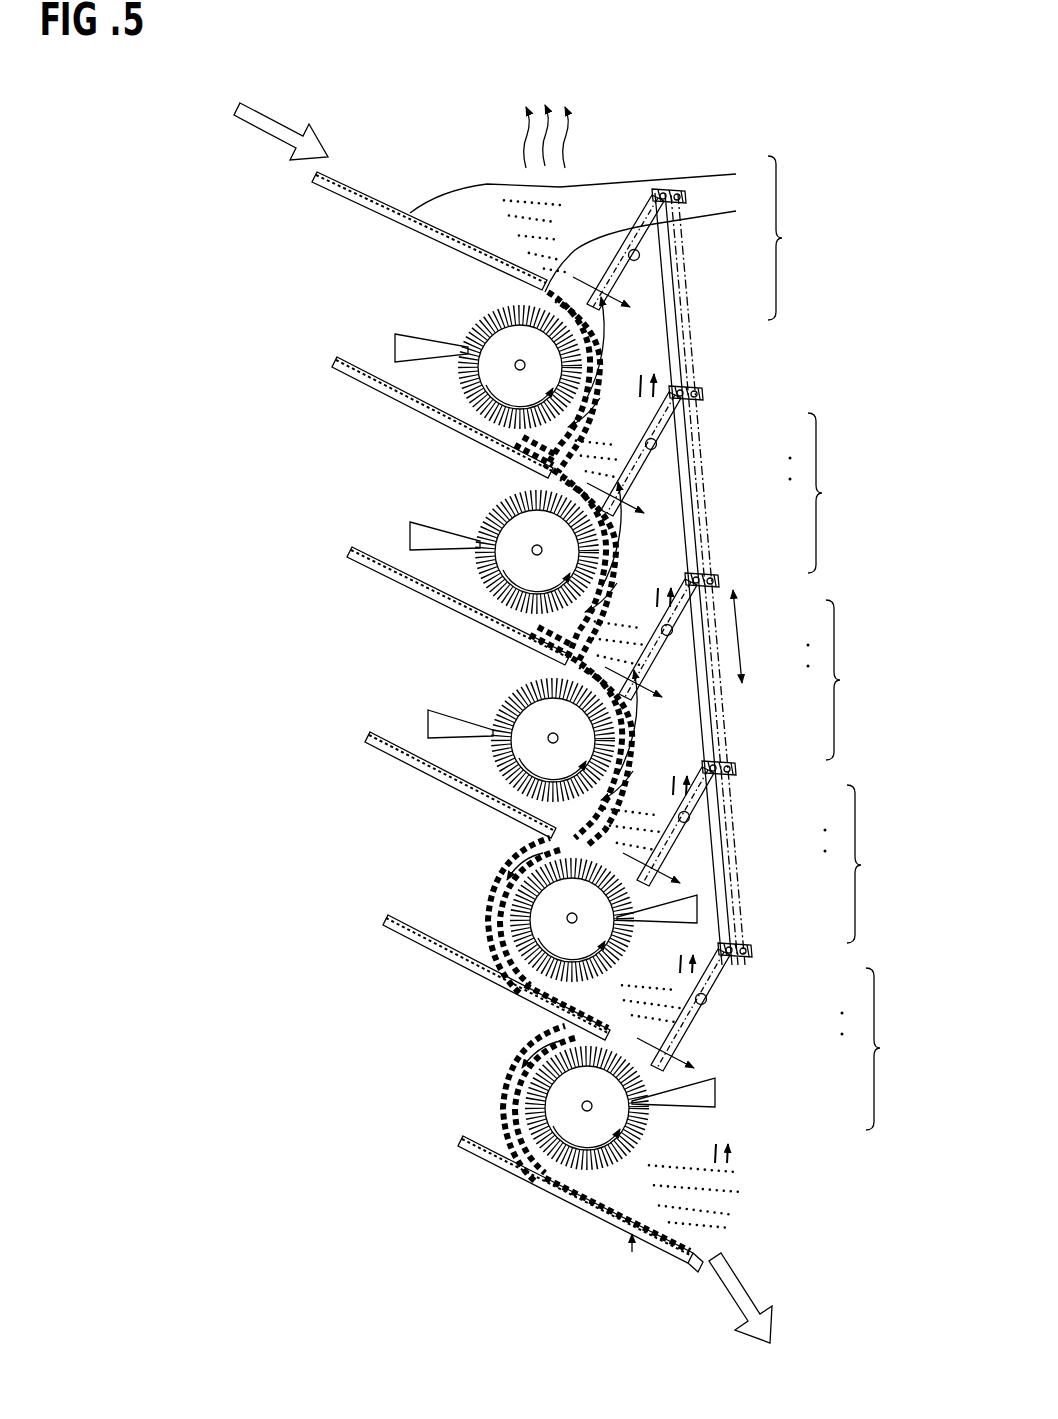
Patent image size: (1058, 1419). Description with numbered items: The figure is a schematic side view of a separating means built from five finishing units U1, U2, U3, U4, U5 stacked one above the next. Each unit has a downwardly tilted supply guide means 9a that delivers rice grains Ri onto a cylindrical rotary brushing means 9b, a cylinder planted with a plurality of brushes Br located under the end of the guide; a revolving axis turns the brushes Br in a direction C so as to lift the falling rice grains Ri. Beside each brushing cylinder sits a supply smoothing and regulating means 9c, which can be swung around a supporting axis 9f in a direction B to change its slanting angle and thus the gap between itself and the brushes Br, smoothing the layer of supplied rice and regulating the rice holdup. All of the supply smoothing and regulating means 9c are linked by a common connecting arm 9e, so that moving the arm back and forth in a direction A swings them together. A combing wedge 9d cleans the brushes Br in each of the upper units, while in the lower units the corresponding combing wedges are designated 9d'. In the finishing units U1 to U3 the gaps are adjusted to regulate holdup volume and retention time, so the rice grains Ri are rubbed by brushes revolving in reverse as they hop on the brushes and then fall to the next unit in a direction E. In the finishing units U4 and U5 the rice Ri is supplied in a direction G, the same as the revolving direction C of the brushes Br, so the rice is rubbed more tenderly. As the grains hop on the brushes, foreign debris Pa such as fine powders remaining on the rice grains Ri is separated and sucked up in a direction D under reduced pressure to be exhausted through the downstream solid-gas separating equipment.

The supply guide means 9a is at (539, 718).
The cylindrical rotary brushing means 9b is at (656, 245).
The supply smoothing and regulating means 9c is at (475, 343).
The combing wedge 9d is at (575, 495).
The combing wedge 9d' is at (710, 985).
The common connecting arm 9e is at (695, 365).
The supporting axis 9f is at (677, 257).
The finishing unit U1 is at (791, 238).
The finishing unit U2 is at (818, 493).
The finishing unit U3 is at (836, 680).
The finishing unit U4 is at (856, 864).
The finishing unit U5 is at (873, 1049).
The brushes Br is at (470, 392).
The revolving direction of brushes C is at (545, 665).
The back-and-forth moving direction of connecting arm A is at (749, 636).
The swinging direction of supply smoothing and regulating means B is at (644, 673).
The suction direction of foreign debris D is at (626, 618).
The rice falling direction E is at (611, 538).
The rice supply direction G is at (498, 980).
The foreign debris Pa is at (530, 215).
The rice grains Ri is at (589, 783).